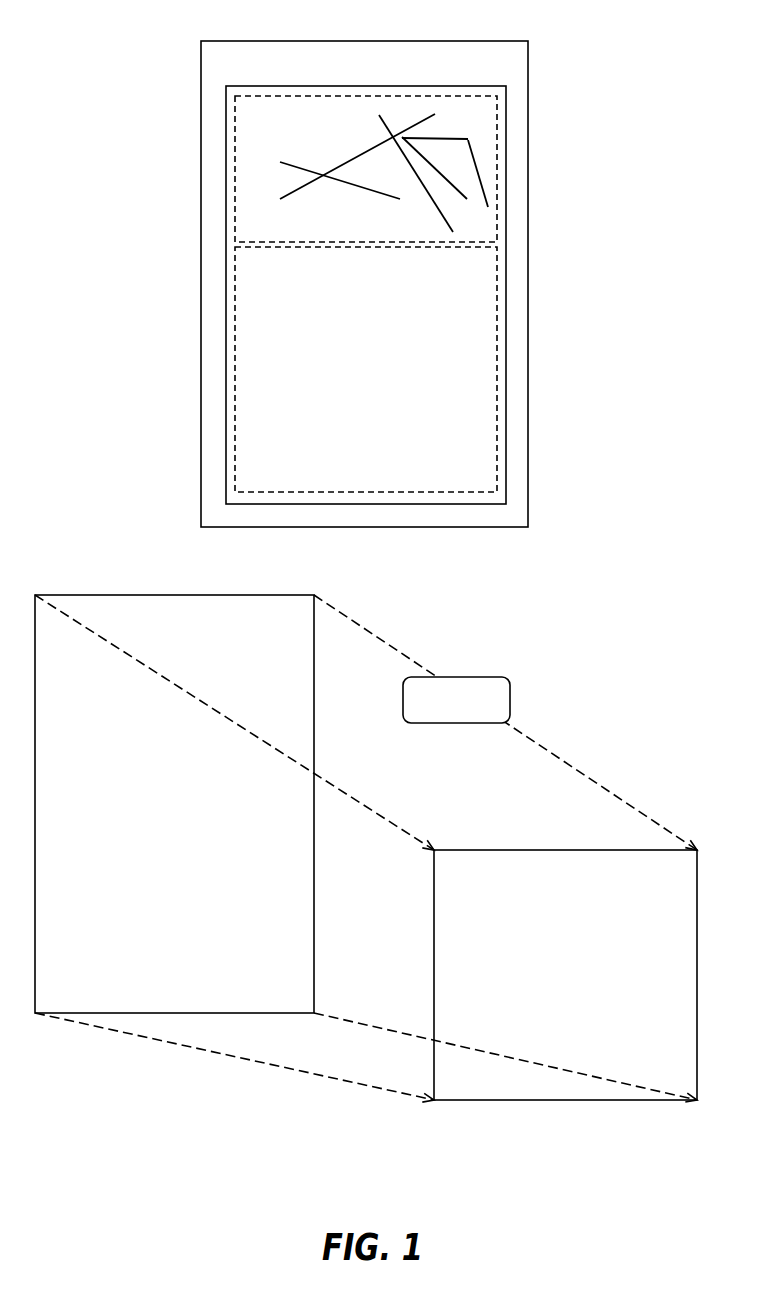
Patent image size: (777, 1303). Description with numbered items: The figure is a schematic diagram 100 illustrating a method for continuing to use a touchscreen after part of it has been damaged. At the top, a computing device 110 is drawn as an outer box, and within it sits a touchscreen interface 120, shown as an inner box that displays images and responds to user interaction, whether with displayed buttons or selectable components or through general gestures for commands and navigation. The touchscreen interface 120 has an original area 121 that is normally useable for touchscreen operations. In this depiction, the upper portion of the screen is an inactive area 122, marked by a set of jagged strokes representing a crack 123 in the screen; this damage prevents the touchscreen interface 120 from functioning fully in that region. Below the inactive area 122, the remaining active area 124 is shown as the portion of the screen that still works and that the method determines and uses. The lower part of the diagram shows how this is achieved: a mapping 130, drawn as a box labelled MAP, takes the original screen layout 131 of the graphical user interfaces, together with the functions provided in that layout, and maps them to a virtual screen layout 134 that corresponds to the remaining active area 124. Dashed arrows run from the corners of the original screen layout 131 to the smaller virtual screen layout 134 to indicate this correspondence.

The schematic diagram 100 is at (170, 55).
The computing device 110 is at (472, 74).
The touchscreen interface 120 is at (226, 118).
The original area 121 is at (235, 178).
The inactive area 122 is at (285, 128).
The crack 123 is at (467, 142).
The remaining active area 124 is at (283, 274).
The mapping 130 is at (503, 677).
The original screen layout 131 is at (85, 832).
The virtual screen layout 134 is at (665, 908).